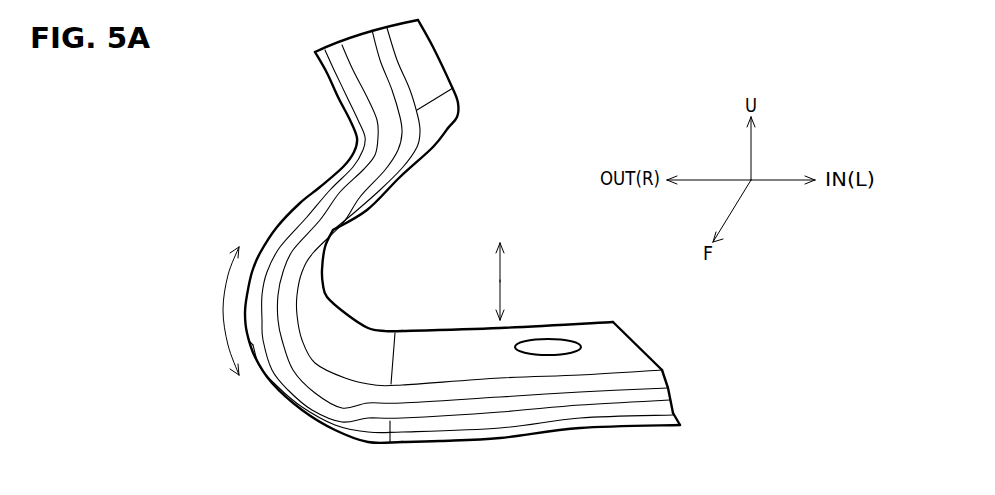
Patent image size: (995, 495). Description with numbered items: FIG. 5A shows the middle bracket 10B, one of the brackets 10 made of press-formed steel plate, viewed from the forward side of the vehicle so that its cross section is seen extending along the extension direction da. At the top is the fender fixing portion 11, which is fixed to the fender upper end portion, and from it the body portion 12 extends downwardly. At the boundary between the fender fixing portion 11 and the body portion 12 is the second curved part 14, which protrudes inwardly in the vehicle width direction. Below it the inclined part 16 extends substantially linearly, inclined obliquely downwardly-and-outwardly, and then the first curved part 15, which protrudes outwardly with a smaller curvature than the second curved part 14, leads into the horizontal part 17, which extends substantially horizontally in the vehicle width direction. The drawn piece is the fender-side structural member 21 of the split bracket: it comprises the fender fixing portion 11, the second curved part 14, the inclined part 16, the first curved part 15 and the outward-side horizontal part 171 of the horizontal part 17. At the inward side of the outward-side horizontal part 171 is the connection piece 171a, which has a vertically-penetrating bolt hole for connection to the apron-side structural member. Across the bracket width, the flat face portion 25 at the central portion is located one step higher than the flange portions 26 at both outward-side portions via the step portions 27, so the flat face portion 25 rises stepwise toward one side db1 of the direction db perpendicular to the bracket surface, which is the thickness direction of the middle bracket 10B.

The middle bracket 10B is at (550, 90).
The bracket 10 is at (460, 231).
The fender fixing portion 11 is at (423, 59).
The second curved part 14 is at (445, 117).
The inclined part 16 is at (383, 192).
The body portion 12 is at (348, 307).
The first curved part 15 is at (270, 387).
The fender-side structural member 21 is at (502, 157).
The horizontal part 17 is at (559, 372).
The outward-side horizontal part 171 is at (547, 437).
The connection piece 171a is at (577, 331).
The flat face portion 25 is at (617, 340).
The step portion 27 is at (657, 397).
The flange portion 26 is at (668, 426).
The extension direction da is at (214, 311).
The one side of direction db db1 is at (502, 270).
The direction perpendicular to bracket surface db is at (515, 280).